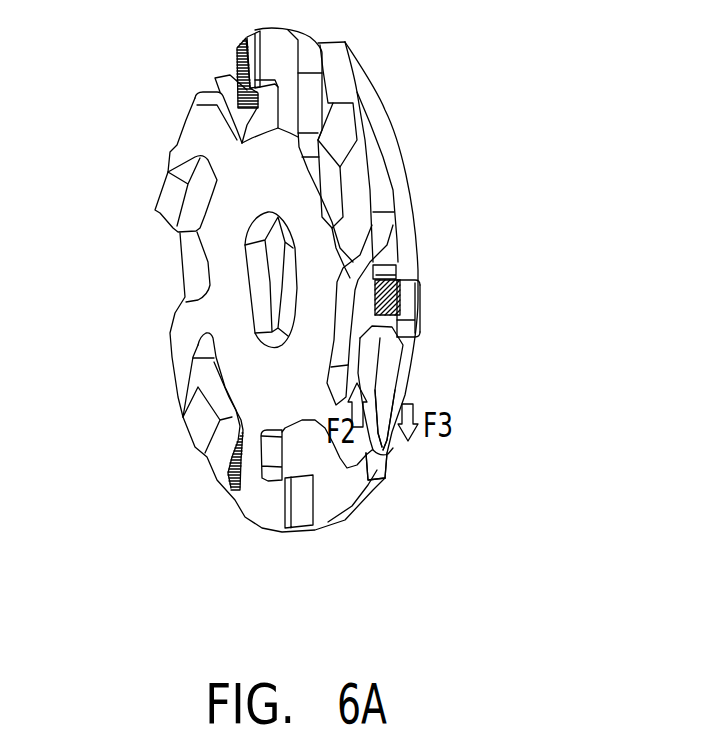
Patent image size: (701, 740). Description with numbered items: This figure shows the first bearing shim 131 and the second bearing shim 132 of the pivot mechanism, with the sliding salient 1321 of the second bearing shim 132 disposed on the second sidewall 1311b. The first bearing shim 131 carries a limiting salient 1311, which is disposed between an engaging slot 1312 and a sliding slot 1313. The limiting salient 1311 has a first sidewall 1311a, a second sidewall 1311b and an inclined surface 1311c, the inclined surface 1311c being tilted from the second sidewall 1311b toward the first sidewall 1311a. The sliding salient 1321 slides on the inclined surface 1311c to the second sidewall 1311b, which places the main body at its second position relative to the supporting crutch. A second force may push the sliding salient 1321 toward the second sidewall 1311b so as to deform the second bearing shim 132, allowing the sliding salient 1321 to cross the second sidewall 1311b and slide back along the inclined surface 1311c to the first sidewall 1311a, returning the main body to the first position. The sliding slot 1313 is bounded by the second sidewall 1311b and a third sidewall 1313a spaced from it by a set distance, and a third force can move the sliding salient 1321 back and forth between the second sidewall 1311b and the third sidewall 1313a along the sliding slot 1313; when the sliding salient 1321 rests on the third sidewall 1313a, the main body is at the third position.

The first bearing shim 131 is at (368, 87).
The second bearing shim 132 is at (175, 333).
The limiting salient 1311 is at (348, 319).
The first sidewall 1311a is at (398, 279).
The second sidewall 1311b is at (412, 340).
The inclined surface 1311c is at (383, 304).
The engaging slot 1312 is at (426, 274).
The sliding slot 1313 is at (527, 503).
The third sidewall 1313a is at (388, 438).
The sliding salient 1321 is at (363, 365).